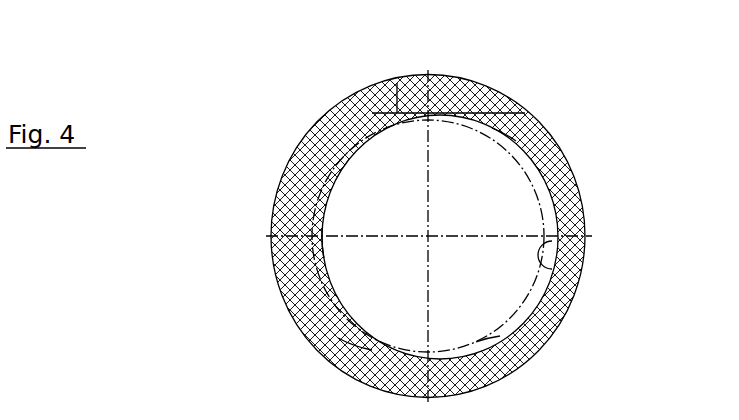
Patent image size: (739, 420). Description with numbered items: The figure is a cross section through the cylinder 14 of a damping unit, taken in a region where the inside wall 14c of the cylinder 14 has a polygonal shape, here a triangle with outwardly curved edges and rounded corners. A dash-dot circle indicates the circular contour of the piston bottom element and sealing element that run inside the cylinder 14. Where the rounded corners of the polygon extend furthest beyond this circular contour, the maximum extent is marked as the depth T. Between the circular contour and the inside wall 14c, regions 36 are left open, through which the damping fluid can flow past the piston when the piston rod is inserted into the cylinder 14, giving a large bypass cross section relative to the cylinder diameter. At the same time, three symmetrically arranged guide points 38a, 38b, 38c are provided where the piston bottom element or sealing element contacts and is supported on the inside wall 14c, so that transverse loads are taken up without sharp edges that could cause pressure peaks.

The cylinder 14 is at (557, 105).
The inside wall 14c is at (558, 230).
The depth T is at (369, 137).
The guide point 38a is at (322, 243).
The guide point 38b is at (497, 147).
The guide point 38c is at (486, 342).
The regions 36 is at (352, 358).